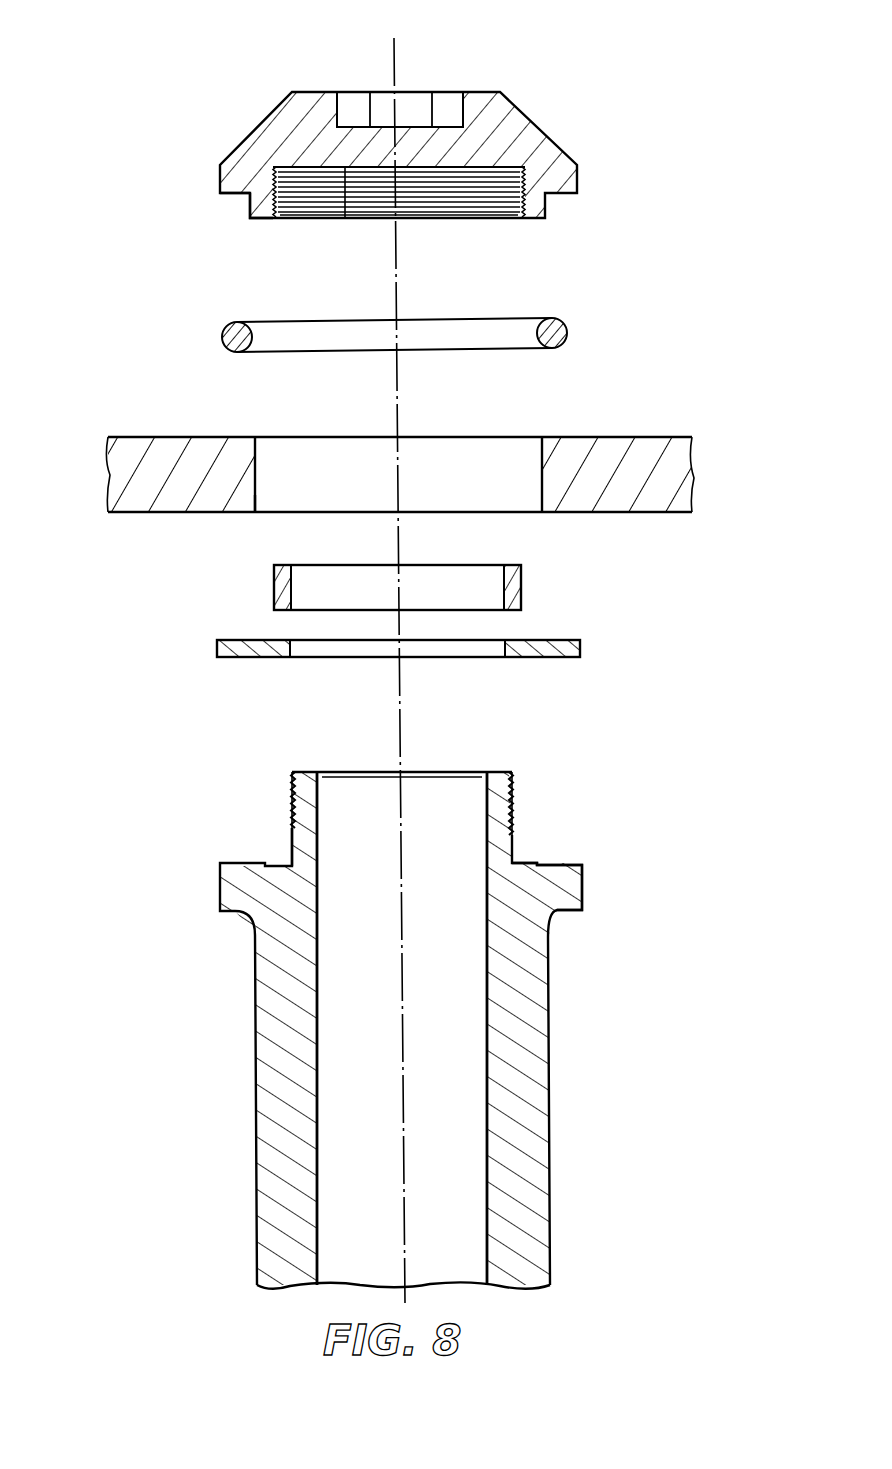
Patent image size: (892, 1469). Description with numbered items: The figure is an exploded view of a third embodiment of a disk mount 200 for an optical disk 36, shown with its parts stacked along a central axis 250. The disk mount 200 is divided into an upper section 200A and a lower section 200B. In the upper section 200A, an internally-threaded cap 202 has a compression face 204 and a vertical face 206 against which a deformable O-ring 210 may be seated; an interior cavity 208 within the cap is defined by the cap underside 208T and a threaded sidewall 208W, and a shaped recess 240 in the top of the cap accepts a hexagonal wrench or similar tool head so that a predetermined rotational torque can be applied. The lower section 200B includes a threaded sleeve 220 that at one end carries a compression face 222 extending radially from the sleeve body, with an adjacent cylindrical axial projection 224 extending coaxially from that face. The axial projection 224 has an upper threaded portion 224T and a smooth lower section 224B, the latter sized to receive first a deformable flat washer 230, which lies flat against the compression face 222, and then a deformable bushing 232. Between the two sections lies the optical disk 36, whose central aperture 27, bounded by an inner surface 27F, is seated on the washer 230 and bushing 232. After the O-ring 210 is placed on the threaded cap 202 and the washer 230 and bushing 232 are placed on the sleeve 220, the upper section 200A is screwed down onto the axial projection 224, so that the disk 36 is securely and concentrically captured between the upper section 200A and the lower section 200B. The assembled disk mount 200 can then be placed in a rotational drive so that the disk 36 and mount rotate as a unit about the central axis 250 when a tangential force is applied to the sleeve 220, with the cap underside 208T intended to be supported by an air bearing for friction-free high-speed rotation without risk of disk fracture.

The disk mount 200 is at (759, 177).
The upper section 200A is at (660, 388).
The lower section 200B is at (667, 1288).
The internally-threaded cap 202 is at (250, 137).
The compression face 204 is at (227, 200).
The vertical face 206 is at (250, 222).
The interior cavity 208 is at (440, 236).
The cap underside 208T is at (345, 218).
The threaded sidewall 208W is at (467, 203).
The deformable O-ring 210 is at (222, 340).
The recess 240 is at (408, 100).
The central axis 250 is at (392, 65).
The optical disk 36 is at (158, 437).
The central aperture 27 is at (333, 455).
The inner surface 27F is at (262, 500).
The deformable bushing 232 is at (525, 588).
The deformable flat washer 230 is at (580, 650).
The threaded sleeve 220 is at (563, 913).
The compression face 222 is at (567, 863).
The cylindrical axial projection 224 is at (170, 765).
The upper threaded portion 224T is at (290, 792).
The smooth lower section 224B is at (290, 845).